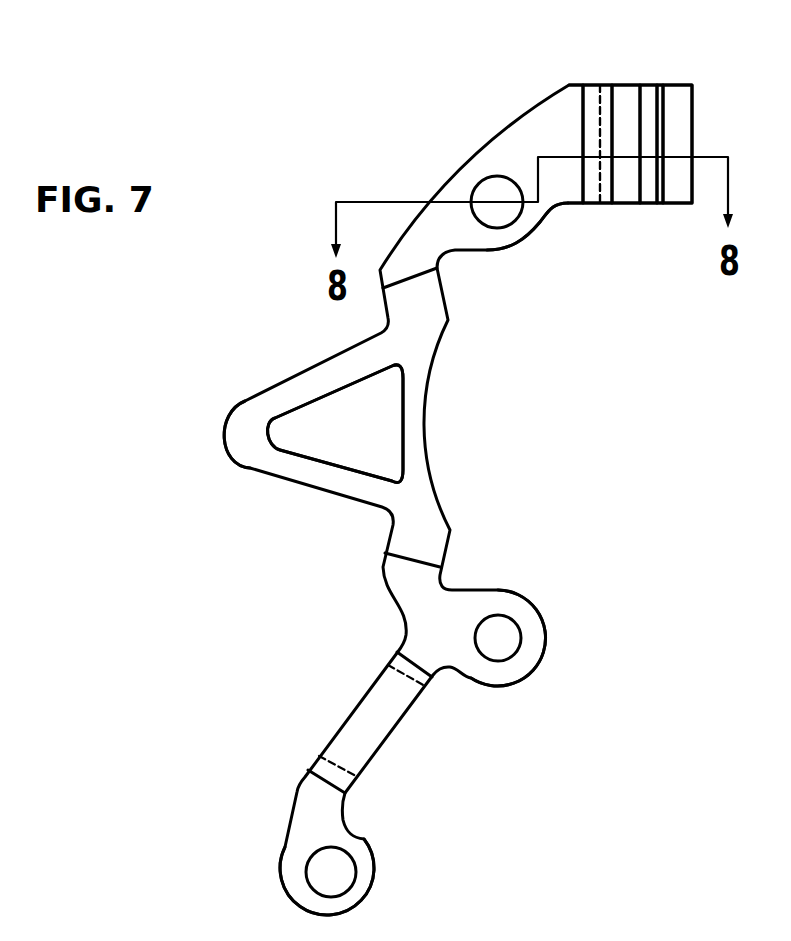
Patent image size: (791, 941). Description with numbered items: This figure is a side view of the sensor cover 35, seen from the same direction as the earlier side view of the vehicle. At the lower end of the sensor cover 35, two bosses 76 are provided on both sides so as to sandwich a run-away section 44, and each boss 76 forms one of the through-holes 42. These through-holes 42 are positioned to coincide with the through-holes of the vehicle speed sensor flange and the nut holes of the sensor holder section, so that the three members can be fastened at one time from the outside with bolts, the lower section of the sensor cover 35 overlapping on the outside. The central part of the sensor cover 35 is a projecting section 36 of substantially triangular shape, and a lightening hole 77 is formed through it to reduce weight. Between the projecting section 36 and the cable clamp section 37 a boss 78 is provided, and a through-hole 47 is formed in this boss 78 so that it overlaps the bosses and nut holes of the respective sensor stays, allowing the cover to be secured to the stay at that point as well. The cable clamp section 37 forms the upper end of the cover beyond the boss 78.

The sensor cover 35 is at (295, 340).
The projecting section 36 is at (233, 438).
The cable clamp section 37 is at (632, 88).
The through-holes 42 is at (513, 645).
The run-away section 44 is at (365, 712).
The through-hole 47 is at (495, 222).
The bosses 76 is at (522, 608).
The lightening hole 77 is at (338, 458).
The boss 78 is at (527, 233).